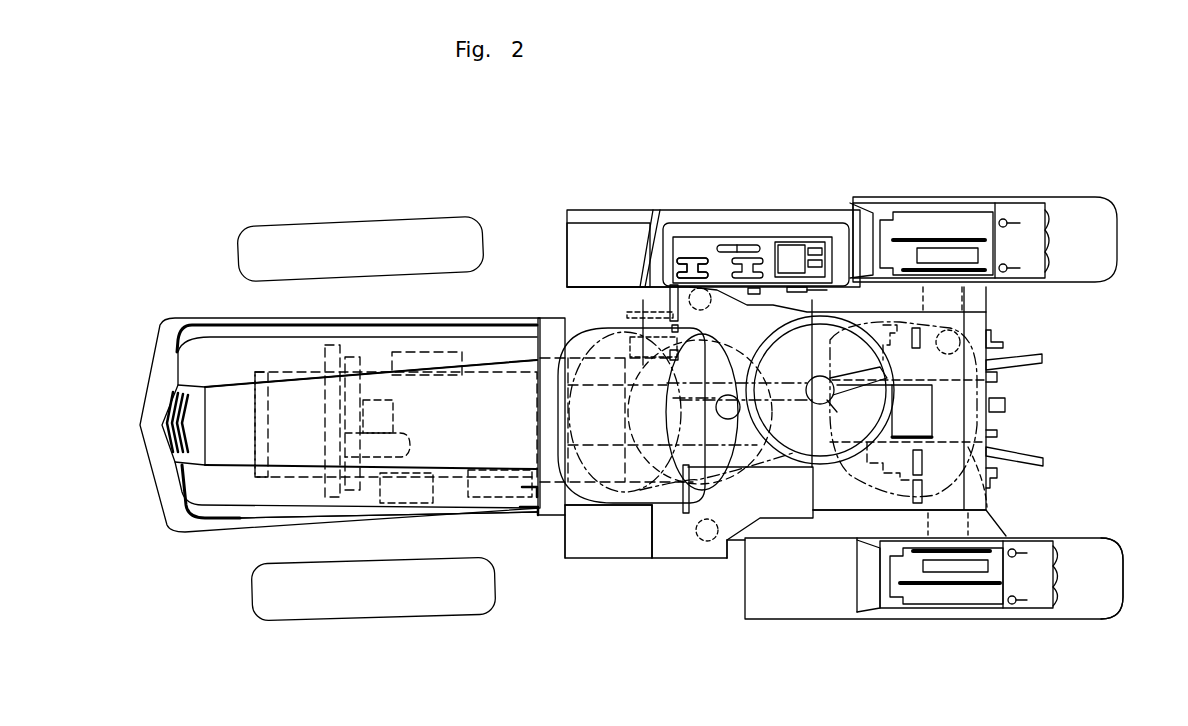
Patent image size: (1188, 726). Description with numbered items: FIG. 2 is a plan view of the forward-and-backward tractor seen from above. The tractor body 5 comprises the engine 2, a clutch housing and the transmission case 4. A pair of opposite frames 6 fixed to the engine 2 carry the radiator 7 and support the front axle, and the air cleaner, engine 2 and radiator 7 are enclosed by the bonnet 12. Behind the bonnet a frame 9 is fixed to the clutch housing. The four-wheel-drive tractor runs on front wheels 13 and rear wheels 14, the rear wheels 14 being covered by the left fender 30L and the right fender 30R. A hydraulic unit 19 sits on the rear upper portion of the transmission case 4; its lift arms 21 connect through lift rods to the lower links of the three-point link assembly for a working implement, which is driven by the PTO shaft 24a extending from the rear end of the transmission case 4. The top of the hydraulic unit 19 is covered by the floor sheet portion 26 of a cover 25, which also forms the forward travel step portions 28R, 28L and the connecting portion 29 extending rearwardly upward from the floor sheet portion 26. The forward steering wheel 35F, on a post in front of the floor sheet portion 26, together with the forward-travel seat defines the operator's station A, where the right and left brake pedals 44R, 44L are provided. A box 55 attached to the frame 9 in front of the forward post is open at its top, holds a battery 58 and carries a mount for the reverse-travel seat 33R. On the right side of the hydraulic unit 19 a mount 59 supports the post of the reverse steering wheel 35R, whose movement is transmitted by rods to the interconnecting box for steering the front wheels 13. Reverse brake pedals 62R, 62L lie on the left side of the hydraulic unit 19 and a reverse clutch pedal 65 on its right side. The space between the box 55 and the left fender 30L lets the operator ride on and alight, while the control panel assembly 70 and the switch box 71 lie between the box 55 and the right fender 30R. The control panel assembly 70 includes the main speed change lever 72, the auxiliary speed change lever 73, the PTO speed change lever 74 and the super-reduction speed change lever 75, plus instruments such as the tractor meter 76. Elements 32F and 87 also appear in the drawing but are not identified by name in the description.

The engine 2 is at (440, 455).
The transmission case 4 is at (700, 503).
The body 5 is at (489, 362).
The frames 6 is at (300, 372).
The radiator 7 is at (345, 345).
The frame 9 is at (555, 510).
The bonnet 12 is at (202, 330).
The front wheels 13 is at (430, 232).
The rear wheels 14 is at (1095, 542).
The hydraulic unit 19 is at (990, 380).
The lift arms 21 is at (1042, 357).
The PTO shaft 24a is at (1005, 404).
The cover 25 is at (713, 562).
The floor sheet portion 26 is at (832, 497).
The forward travel step portion 28L is at (673, 558).
The forward travel step portion 28R is at (702, 236).
The connecting portion 29 is at (990, 505).
The left fender 30L is at (810, 603).
The right fender 30R is at (960, 198).
The lever 32F is at (1005, 447).
The seat for reverse travel 33R is at (663, 552).
The steering wheel for forward travel 35F is at (608, 531).
The steering wheel for reverse travel 35R is at (750, 429).
The left brake pedal 44L is at (668, 348).
The right brake pedal 44R is at (670, 305).
The box 55 is at (553, 512).
The battery 58 is at (604, 472).
The mount 59 is at (885, 372).
The reverse brake pedal 62L is at (923, 490).
The reverse brake pedal 62R is at (900, 440).
The reverse clutch pedal 65 is at (922, 337).
The control panel assembly 70 is at (828, 223).
The switch box 71 is at (653, 300).
The main speed change lever 72 is at (742, 264).
The auxiliary speed change lever 73 is at (739, 244).
The PTO speed change lever 74 is at (692, 265).
The speed change lever for super-reduction 75 is at (717, 310).
The tractor meter 76 is at (792, 252).
The dashboard 87 is at (683, 210).
The operator's station A is at (745, 515).